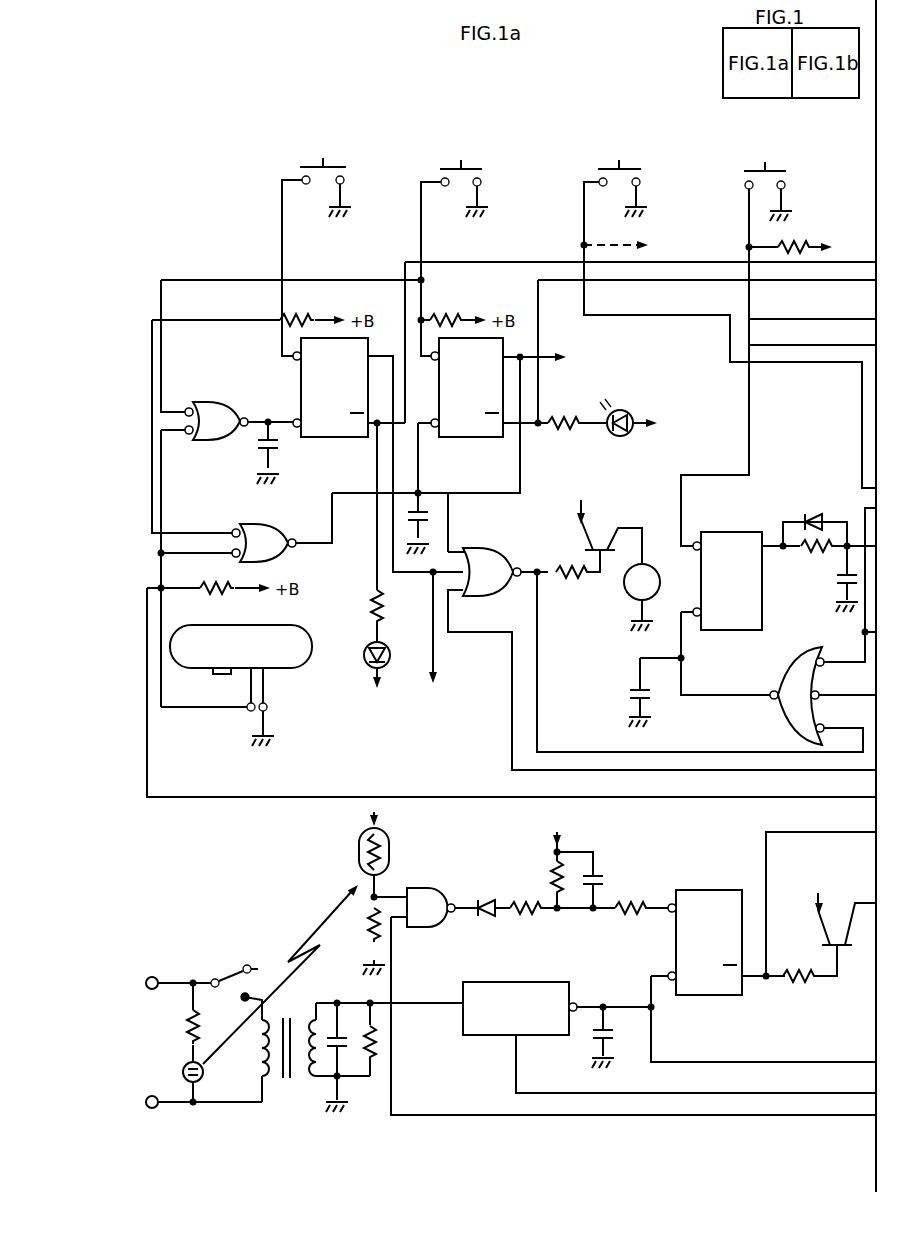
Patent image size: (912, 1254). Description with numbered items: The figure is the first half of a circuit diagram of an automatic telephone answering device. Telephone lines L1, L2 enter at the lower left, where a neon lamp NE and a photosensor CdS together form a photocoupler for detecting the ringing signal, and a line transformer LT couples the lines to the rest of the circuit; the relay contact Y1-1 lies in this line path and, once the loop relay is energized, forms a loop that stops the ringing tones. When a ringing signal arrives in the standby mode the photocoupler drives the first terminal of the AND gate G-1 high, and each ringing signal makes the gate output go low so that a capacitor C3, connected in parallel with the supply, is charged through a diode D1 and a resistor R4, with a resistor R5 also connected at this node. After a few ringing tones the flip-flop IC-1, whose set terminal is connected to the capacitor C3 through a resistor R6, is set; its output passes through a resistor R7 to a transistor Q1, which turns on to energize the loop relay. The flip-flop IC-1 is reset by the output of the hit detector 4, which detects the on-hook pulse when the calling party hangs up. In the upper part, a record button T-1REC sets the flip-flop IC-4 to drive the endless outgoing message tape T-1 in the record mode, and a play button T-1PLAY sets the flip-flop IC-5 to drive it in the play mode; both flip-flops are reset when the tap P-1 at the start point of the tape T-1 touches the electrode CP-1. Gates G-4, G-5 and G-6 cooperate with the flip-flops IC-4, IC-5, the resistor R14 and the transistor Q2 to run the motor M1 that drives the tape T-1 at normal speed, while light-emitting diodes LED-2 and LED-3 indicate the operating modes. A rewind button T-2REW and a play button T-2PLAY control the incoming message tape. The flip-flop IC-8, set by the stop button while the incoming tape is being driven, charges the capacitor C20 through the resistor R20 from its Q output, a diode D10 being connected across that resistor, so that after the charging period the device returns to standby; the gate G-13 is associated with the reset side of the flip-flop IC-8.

The record button T-1REC is at (316, 245).
The play button T-1PLAY is at (460, 246).
The rewind button T-2REW is at (729, 312).
The play button T-2PLAY is at (778, 342).
The flip-flop IC-4 is at (384, 546).
The flip-flop IC-5 is at (498, 444).
The flip-flop IC-8 is at (714, 629).
The flip-flop IC-1 is at (763, 947).
The gate G-5 is at (227, 493).
The gate G-4 is at (242, 448).
The gate G-6 is at (662, 647).
The NOR gate G-13 is at (810, 626).
The AND gate G-1 is at (624, 988).
The light-emitting diode LED-3 is at (616, 411).
The light-emitting diode LED-2 is at (396, 651).
The resistor R14 is at (576, 563).
The transistor Q2 is at (602, 522).
The motor M1 is at (642, 597).
The diode D10 is at (814, 520).
The resistor R20 is at (833, 558).
The capacitor C20 is at (824, 579).
The endless outgoing message tape T-1 is at (241, 634).
The tap P-1 is at (214, 684).
The electrode CP-1 is at (232, 707).
The photosensor CdS is at (394, 884).
The diode D1 is at (489, 895).
The resistor R4 is at (562, 894).
The resistor R5 is at (548, 860).
The capacitor C3 is at (589, 880).
The resistor R6 is at (641, 894).
The resistor R7 is at (810, 974).
The transistor Q1 is at (839, 913).
The hit detector 4 is at (515, 985).
The telephone line L1 is at (177, 971).
The telephone line L2 is at (202, 1091).
The contact Y1-1 is at (224, 969).
The neon lamp NE is at (209, 1044).
The line transformer LT is at (308, 1052).